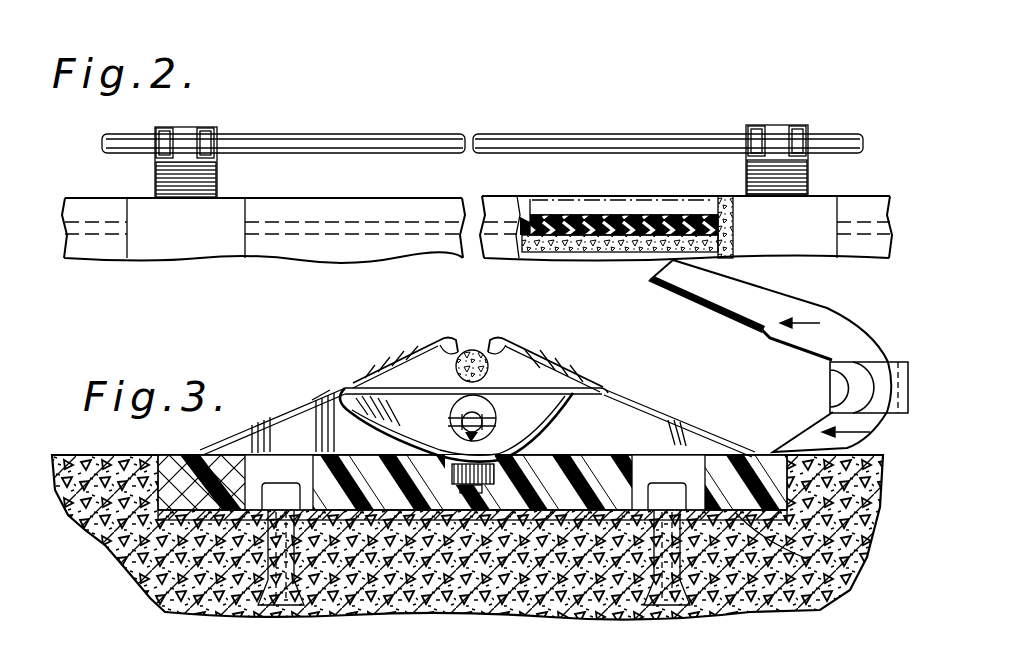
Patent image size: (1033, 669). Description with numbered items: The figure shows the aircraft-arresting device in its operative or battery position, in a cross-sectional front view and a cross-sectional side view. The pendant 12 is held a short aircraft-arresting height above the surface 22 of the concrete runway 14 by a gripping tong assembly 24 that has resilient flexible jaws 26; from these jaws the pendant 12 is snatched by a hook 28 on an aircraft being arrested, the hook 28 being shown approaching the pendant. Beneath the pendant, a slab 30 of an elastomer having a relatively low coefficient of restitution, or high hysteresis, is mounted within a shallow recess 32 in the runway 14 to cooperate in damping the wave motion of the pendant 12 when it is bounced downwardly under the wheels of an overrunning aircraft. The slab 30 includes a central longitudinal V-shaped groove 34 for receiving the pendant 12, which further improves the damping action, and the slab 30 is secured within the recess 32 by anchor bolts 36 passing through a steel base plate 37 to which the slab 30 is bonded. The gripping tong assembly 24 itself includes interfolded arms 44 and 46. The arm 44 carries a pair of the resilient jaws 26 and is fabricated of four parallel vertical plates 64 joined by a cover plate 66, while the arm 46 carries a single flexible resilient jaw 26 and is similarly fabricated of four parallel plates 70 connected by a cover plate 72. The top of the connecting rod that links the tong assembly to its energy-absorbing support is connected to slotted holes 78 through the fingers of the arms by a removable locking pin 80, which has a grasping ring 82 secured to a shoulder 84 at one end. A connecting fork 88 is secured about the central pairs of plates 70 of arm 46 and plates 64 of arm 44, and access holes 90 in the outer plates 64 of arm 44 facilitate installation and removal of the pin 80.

In FIG. 2, the pendant 12 is at (578, 207).
In FIG. 3, the pendant 12 is at (472, 348).
In FIG. 2, the runway 14 is at (485, 190).
In FIG. 3, the runway 14 is at (895, 445).
In FIG. 2, the surface 22 is at (413, 190).
In FIG. 3, the surface 22 is at (63, 419).
In FIG. 2, the gripping tong assembly 24 is at (148, 187).
In FIG. 3, the gripping tong assembly 24 is at (568, 358).
In FIG. 2, the resilient flexible jaws 26 is at (183, 130).
In FIG. 3, the resilient flexible jaws 26 is at (430, 367).
In FIG. 3, the hook 28 is at (843, 340).
In FIG. 2, the slab 30 is at (562, 256).
In FIG. 3, the slab 30 is at (195, 490).
In FIG. 3, the recess 32 is at (200, 457).
In FIG. 2, the V-shaped groove 34 is at (593, 256).
In FIG. 3, the V-shaped groove 34 is at (490, 483).
In FIG. 3, the anchor bolts 36 is at (185, 607).
In FIG. 2, the steel base plate 37 is at (550, 256).
In FIG. 3, the steel base plate 37 is at (768, 513).
In FIG. 3, the arm 44 is at (632, 394).
In FIG. 2, the arm 46 is at (217, 180).
In FIG. 3, the arm 46 is at (302, 398).
In FIG. 3, the parallel vertical plates 64 is at (662, 437).
In FIG. 3, the cover plate 66 is at (662, 424).
In FIG. 3, the parallel plates 70 is at (263, 440).
In FIG. 3, the cover plate 72 is at (257, 442).
In FIG. 3, the slotted holes 78 is at (460, 408).
In FIG. 3, the removable locking pin 80 is at (462, 433).
In FIG. 3, the grasping ring 82 is at (492, 428).
In FIG. 3, the shoulder 84 is at (490, 413).
In FIG. 3, the connecting fork 88 is at (465, 478).
In FIG. 3, the access holes 90 is at (456, 425).